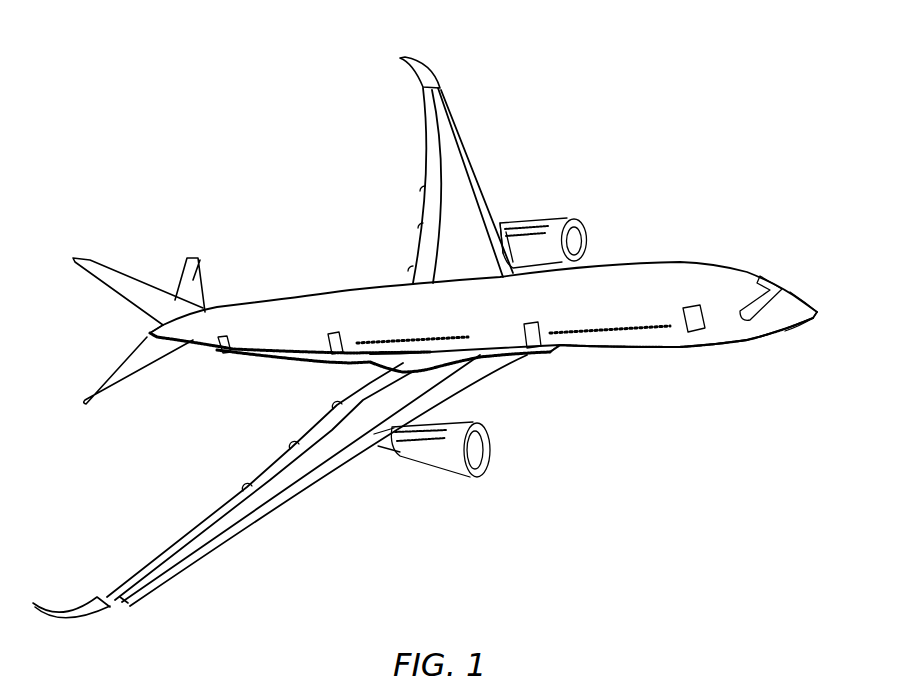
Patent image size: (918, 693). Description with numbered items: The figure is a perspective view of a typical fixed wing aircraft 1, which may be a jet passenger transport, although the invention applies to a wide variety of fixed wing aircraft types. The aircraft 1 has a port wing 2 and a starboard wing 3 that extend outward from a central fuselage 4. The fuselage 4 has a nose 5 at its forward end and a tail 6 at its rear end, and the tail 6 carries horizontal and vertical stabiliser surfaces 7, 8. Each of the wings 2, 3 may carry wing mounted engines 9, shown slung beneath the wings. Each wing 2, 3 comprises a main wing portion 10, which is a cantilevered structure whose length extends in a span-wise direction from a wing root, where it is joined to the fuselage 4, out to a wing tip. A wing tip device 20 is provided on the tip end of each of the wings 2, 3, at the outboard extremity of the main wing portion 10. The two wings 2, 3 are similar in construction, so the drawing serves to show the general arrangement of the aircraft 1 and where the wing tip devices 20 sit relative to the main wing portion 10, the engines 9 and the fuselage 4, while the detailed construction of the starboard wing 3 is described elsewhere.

The fixed wing aircraft 1 is at (652, 128).
The port wing 2 is at (474, 163).
The starboard wing 3 is at (302, 468).
The fuselage 4 is at (363, 313).
The nose 5 is at (813, 312).
The tail 6 is at (157, 332).
The horizontal stabiliser surface 7 is at (195, 282).
The vertical stabiliser surface 8 is at (103, 272).
The wing mounted engine 9 is at (575, 240).
The main wing portion 10 is at (332, 437).
The wing tip device 20 is at (90, 600).